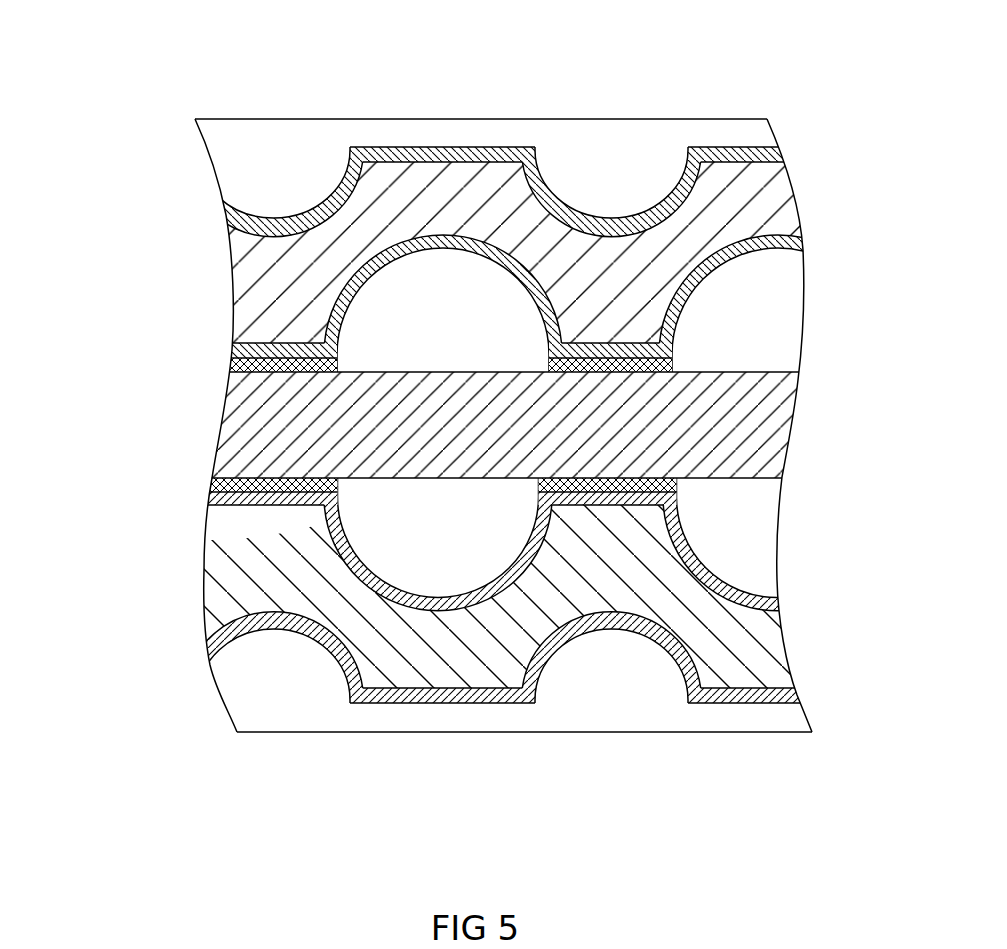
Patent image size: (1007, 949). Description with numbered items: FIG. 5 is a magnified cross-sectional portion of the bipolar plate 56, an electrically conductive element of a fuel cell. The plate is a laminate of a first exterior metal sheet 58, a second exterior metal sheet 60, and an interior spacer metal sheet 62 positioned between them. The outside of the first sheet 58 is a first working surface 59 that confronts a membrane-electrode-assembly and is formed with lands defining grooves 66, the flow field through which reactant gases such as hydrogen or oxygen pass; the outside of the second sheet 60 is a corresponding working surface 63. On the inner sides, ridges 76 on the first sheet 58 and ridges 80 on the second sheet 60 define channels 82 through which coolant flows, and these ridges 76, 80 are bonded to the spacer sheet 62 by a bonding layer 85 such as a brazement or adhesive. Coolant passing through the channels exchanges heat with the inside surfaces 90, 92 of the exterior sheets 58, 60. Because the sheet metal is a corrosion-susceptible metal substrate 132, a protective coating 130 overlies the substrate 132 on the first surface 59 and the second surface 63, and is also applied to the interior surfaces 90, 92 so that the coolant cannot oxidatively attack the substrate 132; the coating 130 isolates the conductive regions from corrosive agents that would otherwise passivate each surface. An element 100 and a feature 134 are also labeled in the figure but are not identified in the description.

The bipolar plate 56 is at (159, 107).
The first exterior metal sheet 58 is at (775, 193).
The first working surface 59 is at (440, 118).
The second exterior metal sheet 60 is at (767, 648).
The interior spacer metal sheet 62 is at (748, 422).
The working surface 63 is at (418, 729).
The grooves 66 is at (612, 170).
The ridges 76 is at (653, 362).
The ridges 80 is at (663, 480).
The channels 82 is at (357, 513).
The bonding layer 85 is at (553, 362).
The inside surface 90 is at (641, 465).
The inside surface 92 is at (641, 380).
The top surface 100 is at (345, 118).
The protective coating 130 is at (230, 216).
The metal substrate 132 is at (471, 172).
The adhesive layers 134 is at (209, 500).